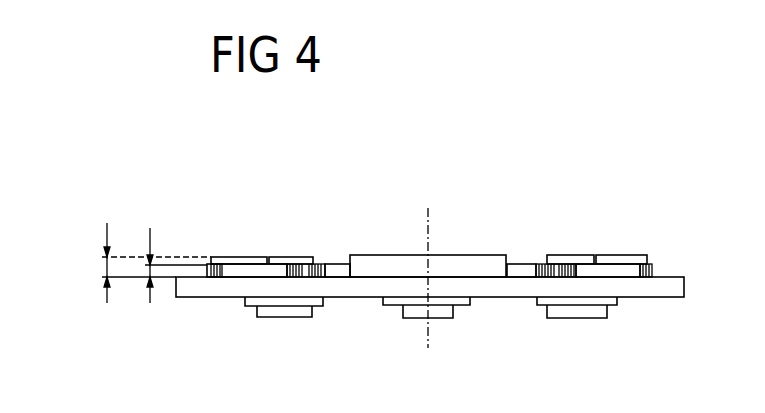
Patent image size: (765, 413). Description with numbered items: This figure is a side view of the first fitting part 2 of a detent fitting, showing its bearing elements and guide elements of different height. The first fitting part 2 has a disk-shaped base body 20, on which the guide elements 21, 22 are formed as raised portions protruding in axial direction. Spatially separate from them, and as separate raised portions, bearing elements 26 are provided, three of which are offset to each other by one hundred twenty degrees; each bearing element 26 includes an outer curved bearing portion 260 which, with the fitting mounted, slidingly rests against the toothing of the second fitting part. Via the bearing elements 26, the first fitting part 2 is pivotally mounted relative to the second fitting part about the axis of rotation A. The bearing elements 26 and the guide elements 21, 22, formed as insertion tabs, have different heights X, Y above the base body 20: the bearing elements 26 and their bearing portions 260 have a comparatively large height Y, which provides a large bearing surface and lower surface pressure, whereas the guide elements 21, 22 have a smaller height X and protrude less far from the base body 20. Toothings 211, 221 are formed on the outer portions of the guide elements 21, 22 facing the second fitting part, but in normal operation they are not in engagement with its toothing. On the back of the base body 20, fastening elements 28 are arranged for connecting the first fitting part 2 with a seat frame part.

The first fitting part 2 is at (663, 276).
The base body 20 is at (670, 290).
The guide element 21 is at (238, 271).
The toothing 211 is at (560, 262).
The guide element 22 is at (335, 272).
The toothing 221 is at (307, 262).
The bearing element 26 is at (257, 256).
The bearing portion 260 is at (393, 262).
The fastening element 28 is at (281, 312).
The axis of rotation A is at (430, 227).
The height X is at (152, 267).
The height Y is at (105, 266).